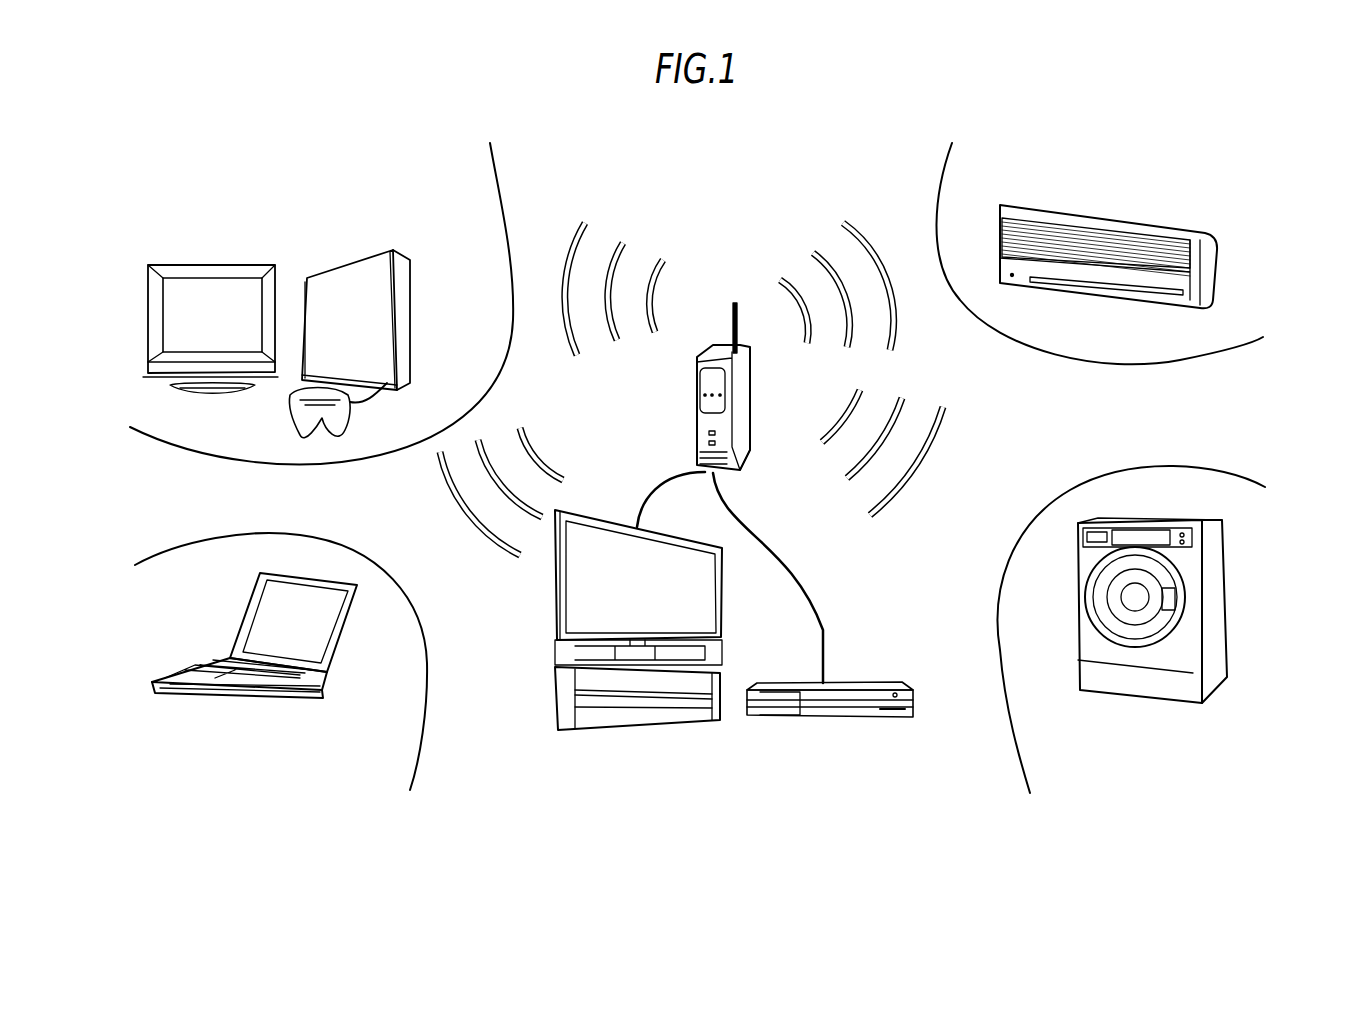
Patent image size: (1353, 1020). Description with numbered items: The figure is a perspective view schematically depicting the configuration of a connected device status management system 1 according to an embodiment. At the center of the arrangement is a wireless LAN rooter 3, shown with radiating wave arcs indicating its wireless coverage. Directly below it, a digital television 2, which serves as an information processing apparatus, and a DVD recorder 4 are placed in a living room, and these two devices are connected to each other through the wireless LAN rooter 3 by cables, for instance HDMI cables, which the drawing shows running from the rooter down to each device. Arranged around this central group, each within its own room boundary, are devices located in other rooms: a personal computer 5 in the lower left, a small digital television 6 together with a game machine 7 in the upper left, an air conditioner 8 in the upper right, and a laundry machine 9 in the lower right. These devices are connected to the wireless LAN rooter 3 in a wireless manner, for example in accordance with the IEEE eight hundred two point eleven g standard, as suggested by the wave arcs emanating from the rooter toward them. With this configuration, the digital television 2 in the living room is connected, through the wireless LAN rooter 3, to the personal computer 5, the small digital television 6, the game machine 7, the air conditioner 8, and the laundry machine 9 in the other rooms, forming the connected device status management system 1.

The connected device status management system 1 is at (727, 128).
The digital television 2 is at (557, 730).
The wireless LAN rooter 3 is at (707, 345).
The DVD recorder 4 is at (790, 720).
The personal computer 5 is at (245, 708).
The small digital television 6 is at (182, 263).
The game machine 7 is at (392, 250).
The air conditioner 8 is at (1058, 202).
The laundry machine 9 is at (1100, 693).